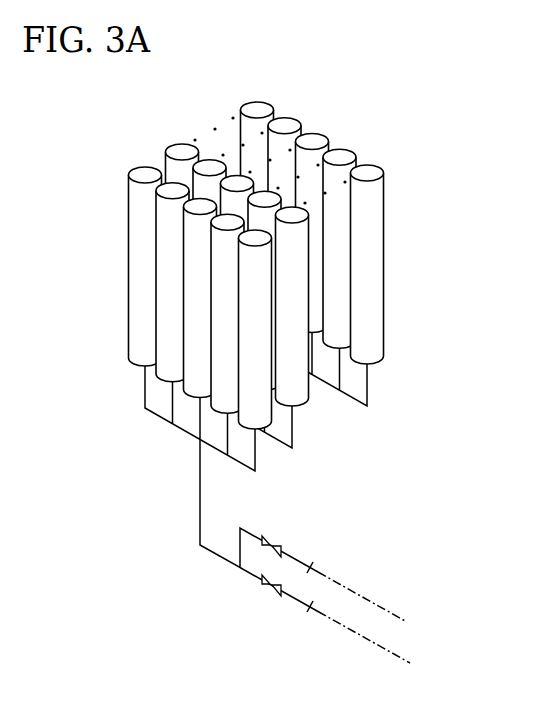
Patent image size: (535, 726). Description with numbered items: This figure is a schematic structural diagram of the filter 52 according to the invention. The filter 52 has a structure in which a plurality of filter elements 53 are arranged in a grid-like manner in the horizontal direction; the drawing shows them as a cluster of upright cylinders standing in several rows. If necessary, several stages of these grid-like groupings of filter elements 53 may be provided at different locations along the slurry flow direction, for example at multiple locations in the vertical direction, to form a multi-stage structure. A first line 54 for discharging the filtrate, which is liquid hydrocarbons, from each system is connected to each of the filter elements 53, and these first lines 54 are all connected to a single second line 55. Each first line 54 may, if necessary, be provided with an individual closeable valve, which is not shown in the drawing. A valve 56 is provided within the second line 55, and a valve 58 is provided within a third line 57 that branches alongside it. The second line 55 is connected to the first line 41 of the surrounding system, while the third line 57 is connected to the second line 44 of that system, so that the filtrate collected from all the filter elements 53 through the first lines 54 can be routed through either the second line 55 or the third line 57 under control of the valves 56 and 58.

The filter 52 is at (276, 276).
The filter element 53 is at (312, 233).
The first line 54 is at (312, 349).
The second line 55 is at (305, 606).
The valve 56 is at (266, 590).
The third line 57 is at (298, 558).
The valve 58 is at (266, 536).
The second line 44 is at (360, 597).
The first line 41 is at (362, 638).